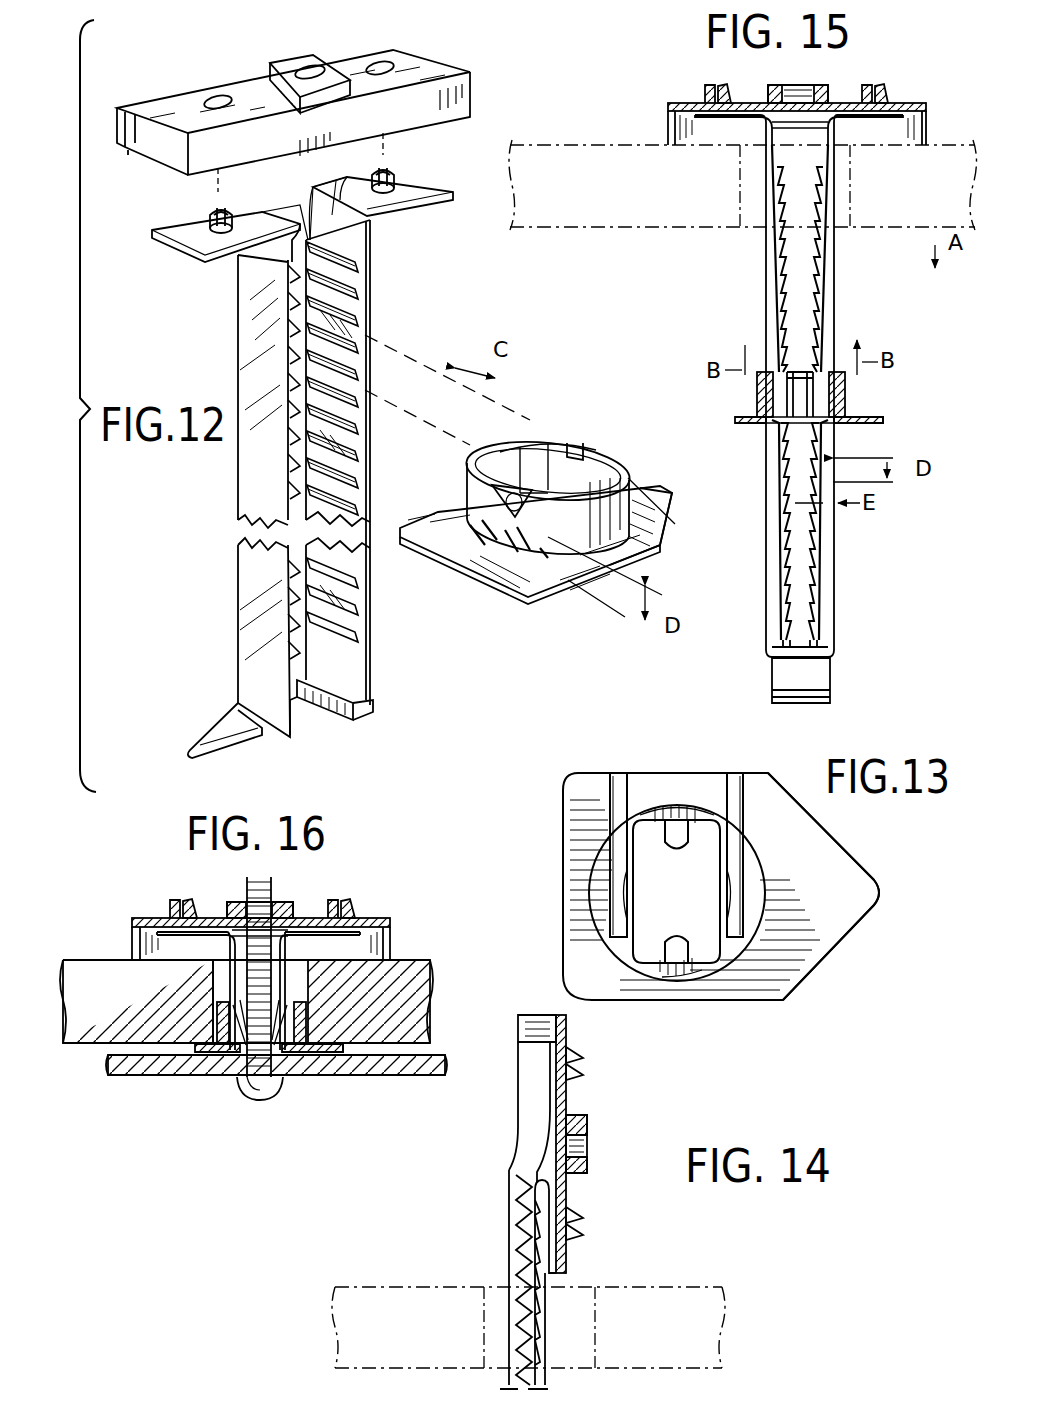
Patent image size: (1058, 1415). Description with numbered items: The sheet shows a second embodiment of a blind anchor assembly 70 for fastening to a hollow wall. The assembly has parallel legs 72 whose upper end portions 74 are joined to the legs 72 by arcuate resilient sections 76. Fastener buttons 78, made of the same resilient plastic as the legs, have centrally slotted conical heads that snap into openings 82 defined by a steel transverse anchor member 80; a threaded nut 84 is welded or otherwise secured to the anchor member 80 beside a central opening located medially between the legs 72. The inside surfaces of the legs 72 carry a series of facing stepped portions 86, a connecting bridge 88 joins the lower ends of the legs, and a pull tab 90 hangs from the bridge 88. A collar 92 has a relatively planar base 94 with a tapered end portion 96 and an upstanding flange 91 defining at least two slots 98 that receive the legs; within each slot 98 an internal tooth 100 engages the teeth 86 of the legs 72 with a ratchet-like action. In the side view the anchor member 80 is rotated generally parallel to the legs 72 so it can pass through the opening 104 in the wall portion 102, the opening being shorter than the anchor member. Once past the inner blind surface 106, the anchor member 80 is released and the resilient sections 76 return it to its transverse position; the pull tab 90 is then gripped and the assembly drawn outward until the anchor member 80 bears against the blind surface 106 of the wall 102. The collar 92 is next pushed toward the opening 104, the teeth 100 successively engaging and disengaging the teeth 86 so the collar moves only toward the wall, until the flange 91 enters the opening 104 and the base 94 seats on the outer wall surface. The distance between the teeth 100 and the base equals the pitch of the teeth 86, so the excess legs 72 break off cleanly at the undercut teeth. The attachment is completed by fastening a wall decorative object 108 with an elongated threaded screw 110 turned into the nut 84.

In FIG. 12, the blind anchor assembly 70 is at (228, 505).
In FIG. 15, the blind anchor assembly 70 is at (846, 568).
In FIG. 12, the legs 72 is at (375, 300).
In FIG. 15, the legs 72 is at (766, 278).
In FIG. 14, the legs 72 is at (508, 1255).
In FIG. 12, the upper end portions 74 is at (185, 242).
In FIG. 15, the upper end portions 74 is at (705, 120).
In FIG. 16, the upper end portions 74 is at (157, 933).
In FIG. 14, the upper end portions 74 is at (540, 1047).
In FIG. 12, the arcuate resilient sections 76 is at (285, 250).
In FIG. 15, the arcuate resilient sections 76 is at (760, 125).
In FIG. 16, the arcuate resilient sections 76 is at (228, 945).
In FIG. 14, the arcuate resilient sections 76 is at (540, 1097).
In FIG. 12, the fastener buttons 78 is at (210, 212).
In FIG. 15, the fastener buttons 78 is at (708, 86).
In FIG. 16, the fastener buttons 78 is at (172, 903).
In FIG. 14, the fastener buttons 78 is at (578, 1052).
In FIG. 12, the transverse anchor member 80 is at (435, 50).
In FIG. 15, the transverse anchor member 80 is at (928, 105).
In FIG. 16, the transverse anchor member 80 is at (393, 916).
In FIG. 14, the transverse anchor member 80 is at (558, 1012).
In FIG. 12, the openings 82 is at (222, 98).
In FIG. 12, the threaded nut 84 is at (275, 62).
In FIG. 15, the threaded nut 84 is at (814, 86).
In FIG. 16, the threaded nut 84 is at (285, 900).
In FIG. 14, the threaded nut 84 is at (580, 1114).
In FIG. 12, the stepped portions 86 is at (290, 385).
In FIG. 15, the stepped portions 86 is at (777, 312).
In FIG. 14, the stepped portions 86 is at (510, 1307).
In FIG. 12, the connecting bridge 88 is at (332, 715).
In FIG. 15, the connecting bridge 88 is at (805, 648).
In FIG. 12, the pull tab 90 is at (205, 730).
In FIG. 15, the pull tab 90 is at (815, 672).
In FIG. 12, the upstanding flange 91 is at (605, 455).
In FIG. 12, the collar 92 is at (608, 420).
In FIG. 15, the collar 92 is at (850, 383).
In FIG. 13, the collar 92 is at (677, 893).
In FIG. 16, the collar 92 is at (310, 1017).
In FIG. 12, the planar base 94 is at (488, 612).
In FIG. 15, the planar base 94 is at (738, 424).
In FIG. 13, the planar base 94 is at (558, 852).
In FIG. 16, the planar base 94 is at (210, 1055).
In FIG. 12, the tapered end portion 96 is at (665, 498).
In FIG. 15, the tapered end portion 96 is at (870, 422).
In FIG. 13, the tapered end portion 96 is at (858, 905).
In FIG. 16, the tapered end portion 96 is at (325, 1055).
In FIG. 12, the slots 98 is at (578, 440).
In FIG. 13, the slots 98 is at (614, 772).
In FIG. 12, the internal tooth 100 is at (512, 512).
In FIG. 13, the internal tooth 100 is at (615, 900).
In FIG. 15, the wall portion 102 is at (630, 230).
In FIG. 16, the wall portion 102 is at (425, 978).
In FIG. 14, the wall portion 102 is at (733, 1315).
In FIG. 15, the opening 104 is at (742, 228).
In FIG. 16, the opening 104 is at (212, 995).
In FIG. 14, the opening 104 is at (486, 1368).
In FIG. 15, the inner blind surface 106 is at (600, 143).
In FIG. 16, the inner blind surface 106 is at (72, 958).
In FIG. 14, the inner blind surface 106 is at (672, 1287).
In FIG. 16, the wall decorative object 108 is at (115, 1080).
In FIG. 16, the elongated threaded screw 110 is at (255, 1090).